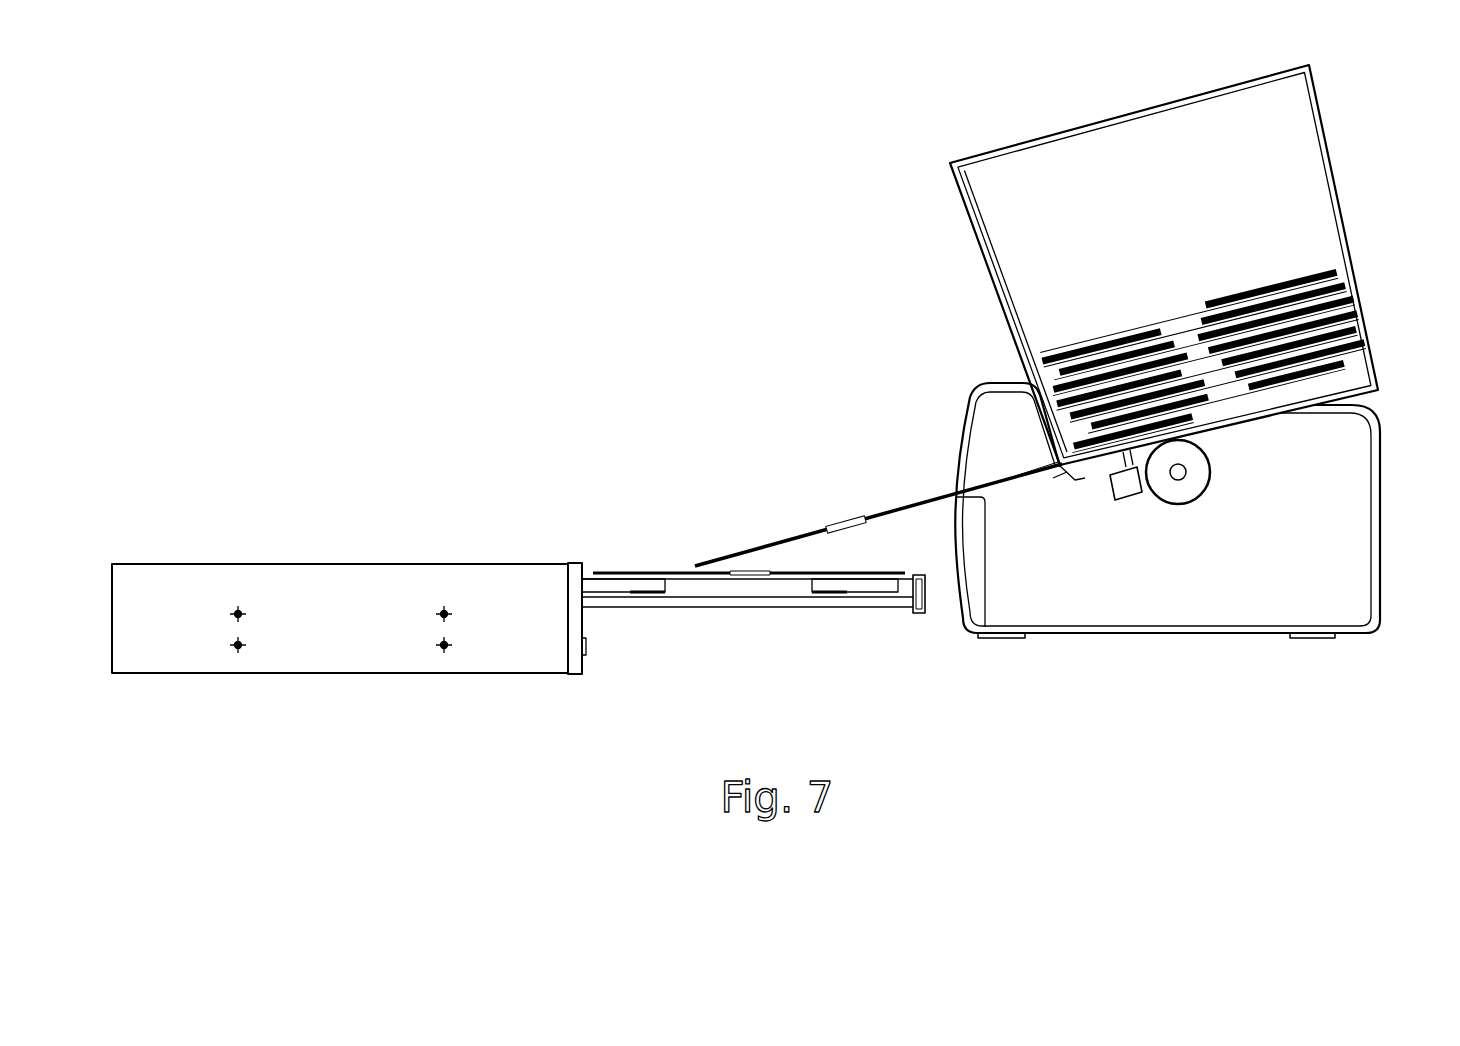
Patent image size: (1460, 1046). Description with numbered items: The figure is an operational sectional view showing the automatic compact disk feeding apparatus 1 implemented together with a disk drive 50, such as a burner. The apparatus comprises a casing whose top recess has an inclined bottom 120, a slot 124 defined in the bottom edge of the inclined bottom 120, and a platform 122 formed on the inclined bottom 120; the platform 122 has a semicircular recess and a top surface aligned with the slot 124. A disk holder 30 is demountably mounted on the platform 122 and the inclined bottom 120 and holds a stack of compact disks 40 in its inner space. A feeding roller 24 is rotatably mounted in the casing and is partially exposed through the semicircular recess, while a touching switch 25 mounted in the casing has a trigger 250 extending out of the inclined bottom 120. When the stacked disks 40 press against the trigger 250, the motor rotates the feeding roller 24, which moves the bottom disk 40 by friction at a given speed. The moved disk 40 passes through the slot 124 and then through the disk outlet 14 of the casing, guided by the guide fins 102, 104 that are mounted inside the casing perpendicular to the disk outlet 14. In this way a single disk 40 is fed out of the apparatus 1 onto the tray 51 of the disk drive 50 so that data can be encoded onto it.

The automatic compact disk feeding apparatus 1 is at (882, 354).
The disk outlet 14 is at (975, 490).
The feeding roller 24 is at (1180, 495).
The touching switch 25 is at (1130, 485).
The disk holder 30 is at (1293, 182).
The compact disk 40 is at (1148, 318).
The disk drive 50 is at (428, 578).
The tray 51 is at (800, 603).
The guide fin 102 is at (950, 437).
The guide fin 104 is at (975, 567).
The inclined bottom 120 is at (1318, 425).
The platform 122 is at (975, 395).
The slot 124 is at (967, 458).
The trigger 250 is at (1068, 472).